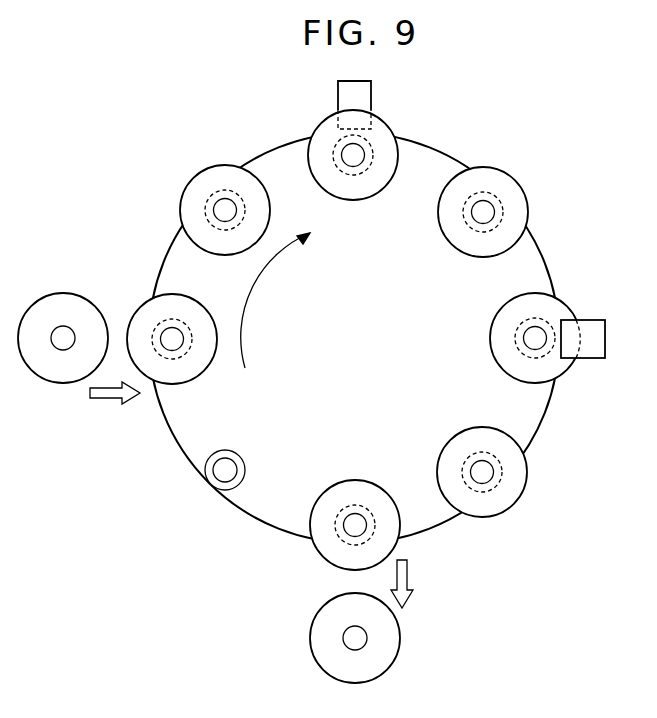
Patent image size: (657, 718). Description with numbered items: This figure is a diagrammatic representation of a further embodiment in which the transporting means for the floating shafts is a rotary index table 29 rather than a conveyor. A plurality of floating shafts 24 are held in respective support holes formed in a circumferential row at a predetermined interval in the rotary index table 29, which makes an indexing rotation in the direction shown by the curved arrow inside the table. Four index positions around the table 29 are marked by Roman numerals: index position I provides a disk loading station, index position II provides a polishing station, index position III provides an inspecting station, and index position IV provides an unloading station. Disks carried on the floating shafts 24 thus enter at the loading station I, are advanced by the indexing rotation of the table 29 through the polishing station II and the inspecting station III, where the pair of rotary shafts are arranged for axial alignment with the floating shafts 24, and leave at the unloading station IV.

The rotary index table 29 is at (187, 422).
The floating shaft 24 is at (337, 520).
The disk loading station I is at (130, 295).
The polishing station II is at (322, 112).
The inspecting station III is at (566, 290).
The unloading station IV is at (418, 558).